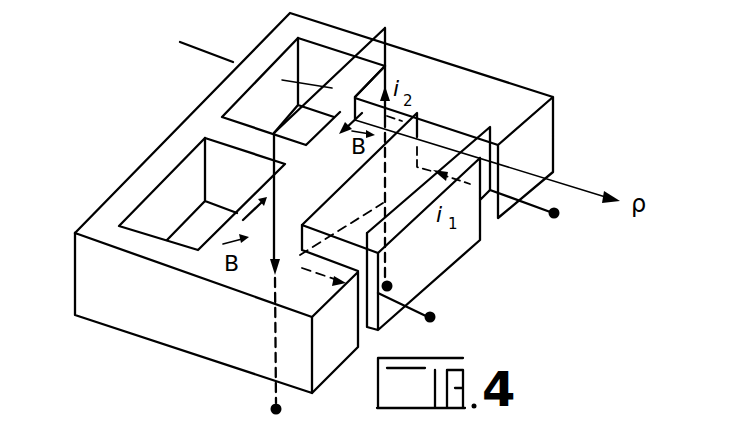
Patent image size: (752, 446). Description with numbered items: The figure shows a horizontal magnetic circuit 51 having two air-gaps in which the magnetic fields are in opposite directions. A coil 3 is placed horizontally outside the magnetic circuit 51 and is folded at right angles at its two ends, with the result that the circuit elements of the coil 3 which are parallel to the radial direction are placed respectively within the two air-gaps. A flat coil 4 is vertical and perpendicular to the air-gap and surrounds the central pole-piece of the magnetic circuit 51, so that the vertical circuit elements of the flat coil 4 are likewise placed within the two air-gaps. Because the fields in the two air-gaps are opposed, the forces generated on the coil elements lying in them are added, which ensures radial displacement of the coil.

The horizontal magnetic circuit 51 is at (113, 306).
The coil 3 is at (403, 207).
The flat coil 4 is at (324, 65).